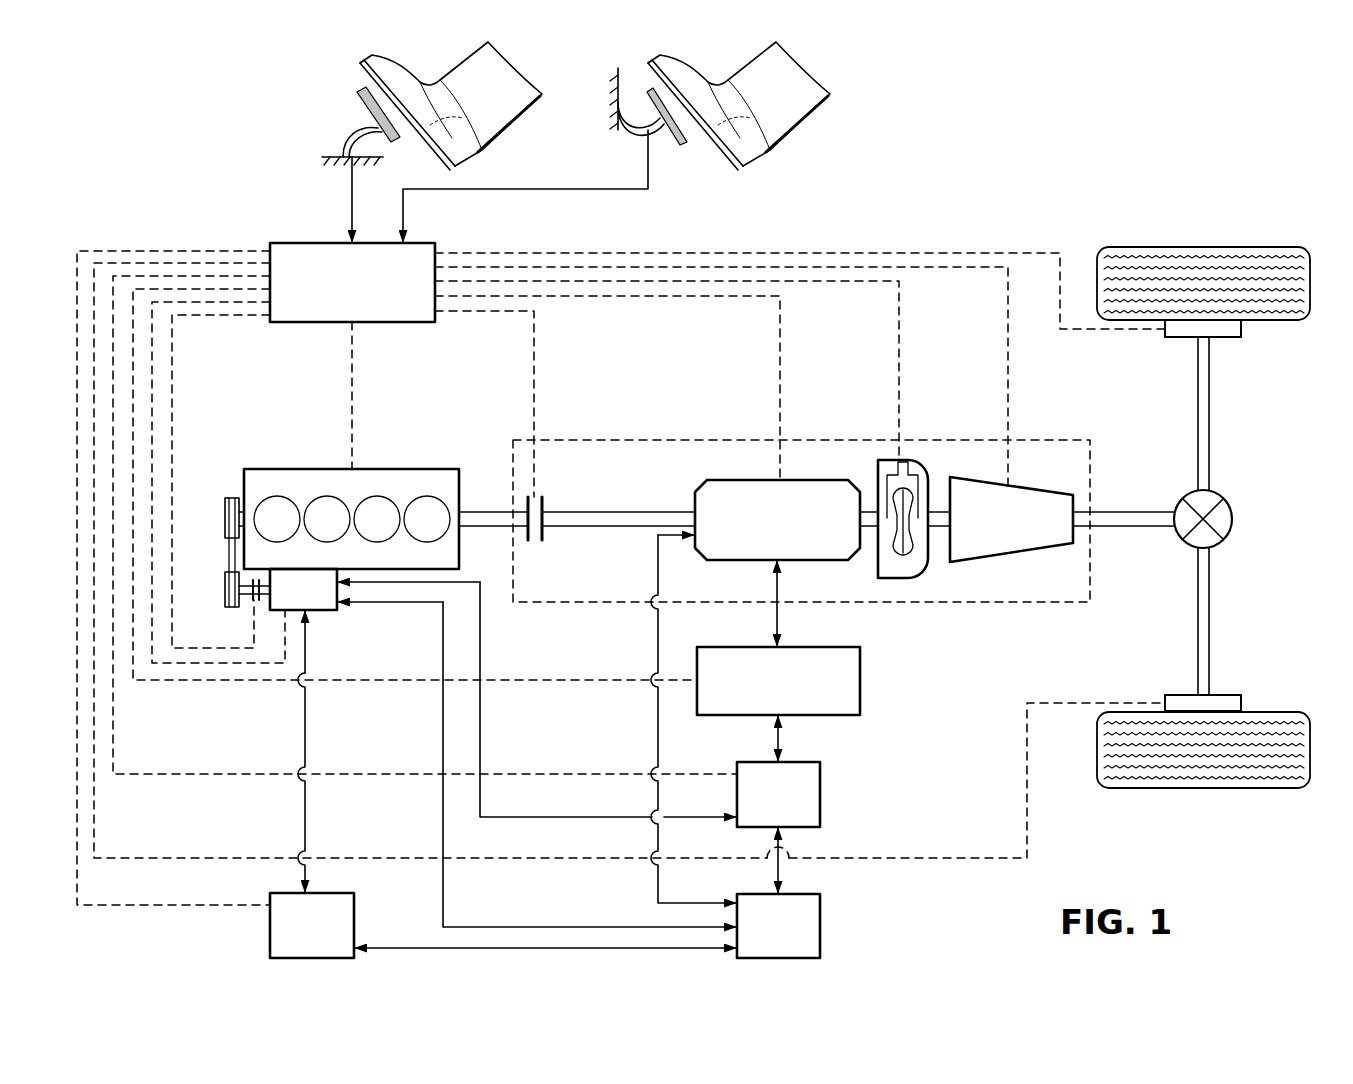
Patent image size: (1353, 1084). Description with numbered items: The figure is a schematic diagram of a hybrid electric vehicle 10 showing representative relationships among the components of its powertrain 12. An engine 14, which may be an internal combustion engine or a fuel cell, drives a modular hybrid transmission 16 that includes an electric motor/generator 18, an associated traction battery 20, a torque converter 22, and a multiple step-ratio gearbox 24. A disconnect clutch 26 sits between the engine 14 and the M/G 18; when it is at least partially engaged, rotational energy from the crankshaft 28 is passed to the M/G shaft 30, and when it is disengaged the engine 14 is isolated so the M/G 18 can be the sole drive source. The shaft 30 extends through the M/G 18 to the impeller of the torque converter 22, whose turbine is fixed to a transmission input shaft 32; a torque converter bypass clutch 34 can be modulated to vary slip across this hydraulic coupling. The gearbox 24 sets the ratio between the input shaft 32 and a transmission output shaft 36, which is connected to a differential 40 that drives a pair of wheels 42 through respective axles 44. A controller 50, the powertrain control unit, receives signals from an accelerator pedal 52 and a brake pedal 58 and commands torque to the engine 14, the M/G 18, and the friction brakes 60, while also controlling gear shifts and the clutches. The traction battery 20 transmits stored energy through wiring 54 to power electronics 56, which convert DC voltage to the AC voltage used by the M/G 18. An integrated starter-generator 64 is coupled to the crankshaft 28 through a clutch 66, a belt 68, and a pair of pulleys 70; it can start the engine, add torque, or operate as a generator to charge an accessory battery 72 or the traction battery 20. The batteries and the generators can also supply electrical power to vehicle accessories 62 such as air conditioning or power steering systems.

The hybrid electric vehicle 10 is at (903, 150).
The powertrain 12 is at (412, 721).
The engine 14 is at (302, 468).
The transmission 16 is at (850, 440).
The electric motor/generator 18 is at (738, 480).
The traction battery 20 is at (820, 795).
The torque converter 22 is at (900, 578).
The gearbox 24 is at (1010, 562).
The disconnect clutch 26 is at (544, 503).
The crankshaft 28 is at (244, 512).
The M/G shaft 30 is at (643, 512).
The transmission input shaft 32 is at (940, 512).
The torque converter bypass clutch 34 is at (905, 462).
The transmission output shaft 36 is at (1118, 512).
The differential 40 is at (1233, 519).
The wheels 42 is at (1205, 247).
The axles 44 is at (1210, 405).
The controller 50 is at (310, 243).
The accelerator pedal 52 is at (362, 105).
The wiring 54 is at (772, 738).
The power electronics 56 is at (860, 690).
The brake pedal 58 is at (692, 145).
The friction brakes 60 is at (1245, 332).
The vehicle accessories 62 is at (820, 928).
The integrated starter-generator 64 is at (320, 610).
The clutch 66 is at (252, 602).
The belt 68 is at (228, 562).
The pulleys 70 is at (222, 520).
The accessory battery 72 is at (355, 922).